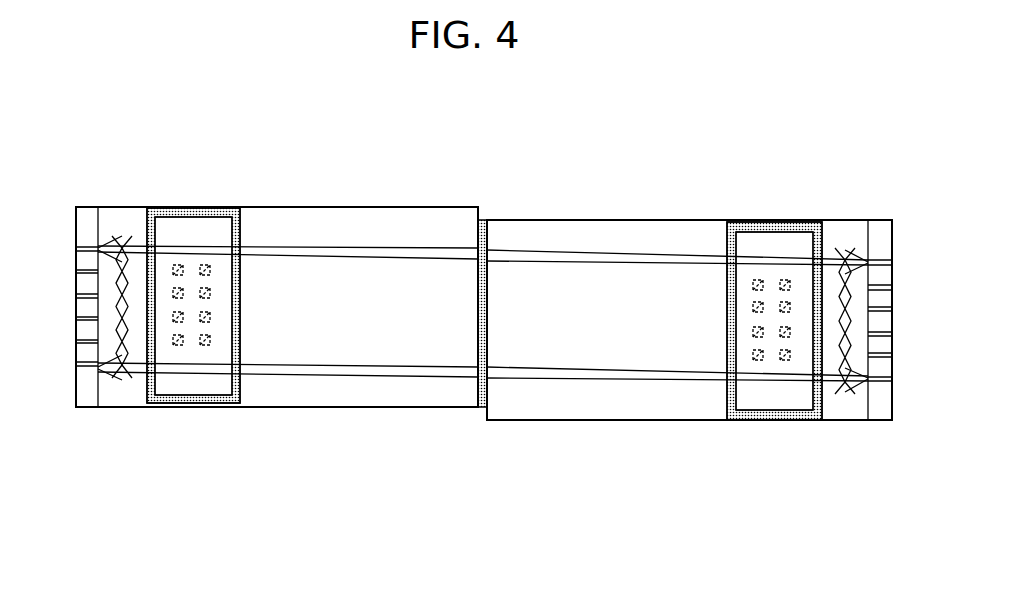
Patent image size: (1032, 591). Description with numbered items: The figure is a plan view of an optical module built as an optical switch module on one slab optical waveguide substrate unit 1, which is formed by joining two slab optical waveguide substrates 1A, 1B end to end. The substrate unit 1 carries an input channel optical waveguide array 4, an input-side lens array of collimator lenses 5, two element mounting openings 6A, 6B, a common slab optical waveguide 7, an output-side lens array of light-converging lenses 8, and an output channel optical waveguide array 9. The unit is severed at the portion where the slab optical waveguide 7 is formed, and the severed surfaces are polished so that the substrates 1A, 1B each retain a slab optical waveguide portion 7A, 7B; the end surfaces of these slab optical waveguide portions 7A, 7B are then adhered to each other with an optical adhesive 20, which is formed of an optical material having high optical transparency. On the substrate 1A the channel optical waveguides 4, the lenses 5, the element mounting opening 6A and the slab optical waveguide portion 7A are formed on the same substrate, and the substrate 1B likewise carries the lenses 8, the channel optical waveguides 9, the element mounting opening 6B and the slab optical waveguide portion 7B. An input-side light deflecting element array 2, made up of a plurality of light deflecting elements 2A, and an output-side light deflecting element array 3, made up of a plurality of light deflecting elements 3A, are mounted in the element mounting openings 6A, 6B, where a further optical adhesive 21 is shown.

The slab optical waveguide substrate unit 1 is at (484, 384).
The slab optical waveguide substrate 1A is at (358, 418).
The slab optical waveguide substrate 1B is at (553, 432).
The input-side light deflecting element array 2 is at (218, 395).
The light deflecting element 2A is at (178, 348).
The output-side light deflecting element array 3 is at (789, 403).
The light deflecting element 3A is at (757, 365).
The input channel optical waveguide 4 is at (90, 262).
The collimator lens 5 is at (120, 336).
The element mounting opening 6A is at (195, 298).
The element mounting opening 6B is at (774, 311).
The slab optical waveguide 7 is at (483, 241).
The slab optical waveguide portion 7A is at (452, 222).
The slab optical waveguide portion 7B is at (542, 228).
The light-converging lens 8 is at (880, 279).
The output channel optical waveguide 9 is at (880, 332).
The optical adhesive 20 is at (462, 400).
The optical adhesive 21 is at (150, 209).